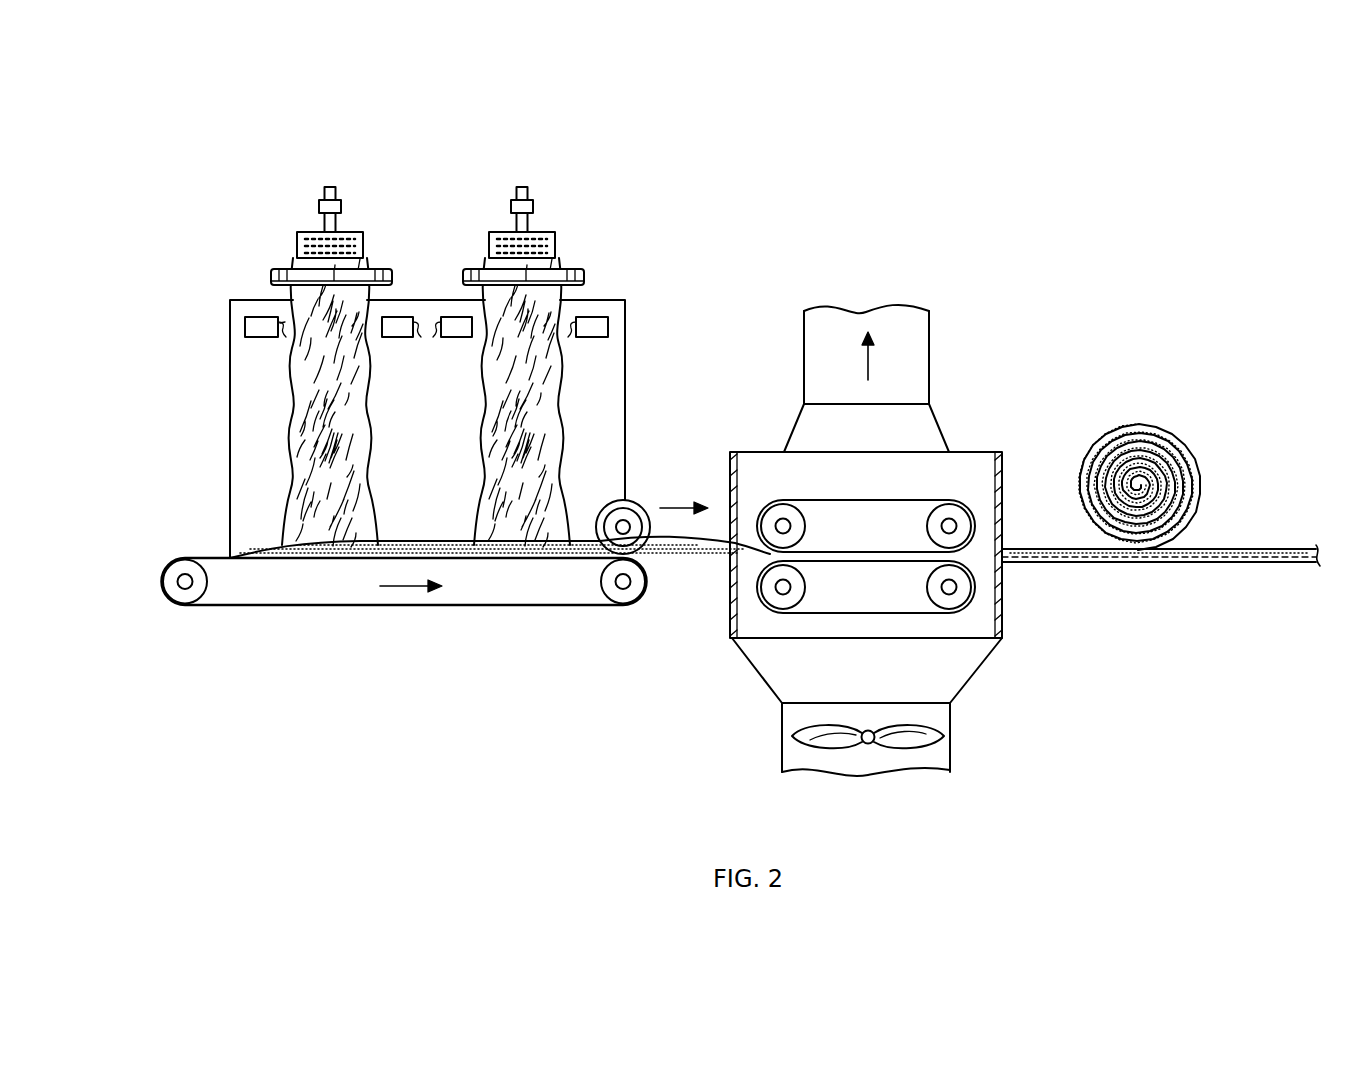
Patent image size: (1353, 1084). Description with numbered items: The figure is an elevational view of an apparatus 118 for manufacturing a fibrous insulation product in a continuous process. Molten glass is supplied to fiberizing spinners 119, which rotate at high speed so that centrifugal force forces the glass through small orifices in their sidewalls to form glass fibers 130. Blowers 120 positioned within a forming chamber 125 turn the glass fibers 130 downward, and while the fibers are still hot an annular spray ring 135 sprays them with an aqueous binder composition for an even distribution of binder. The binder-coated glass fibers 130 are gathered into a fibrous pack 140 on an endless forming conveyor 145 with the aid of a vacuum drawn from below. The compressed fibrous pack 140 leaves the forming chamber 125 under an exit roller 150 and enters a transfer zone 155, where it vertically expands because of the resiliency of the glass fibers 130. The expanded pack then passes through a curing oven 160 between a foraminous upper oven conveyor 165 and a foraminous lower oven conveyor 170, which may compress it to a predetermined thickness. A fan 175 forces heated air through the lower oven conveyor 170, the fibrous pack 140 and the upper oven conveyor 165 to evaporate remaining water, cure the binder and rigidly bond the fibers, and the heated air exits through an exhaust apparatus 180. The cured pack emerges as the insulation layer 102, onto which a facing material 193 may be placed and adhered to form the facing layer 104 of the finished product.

The apparatus 118 is at (162, 147).
The fiberizing spinner 119 is at (352, 231).
The blower 120 is at (245, 327).
The forming chamber 125 is at (243, 432).
The glass fibers 130 is at (296, 356).
The annular spray ring 135 is at (273, 276).
The fibrous pack 140 is at (432, 540).
The forming conveyor 145 is at (285, 607).
The exit roller 150 is at (630, 500).
The transfer zone 155 is at (680, 584).
The curing oven 160 is at (758, 452).
The upper oven conveyor 165 is at (940, 500).
The lower oven conveyor 170 is at (868, 614).
The fan 175 is at (835, 748).
The exhaust apparatus 180 is at (930, 356).
The facing material 193 is at (1150, 420).
The facing layer 104 is at (1228, 548).
The insulation layer 102 is at (1101, 562).